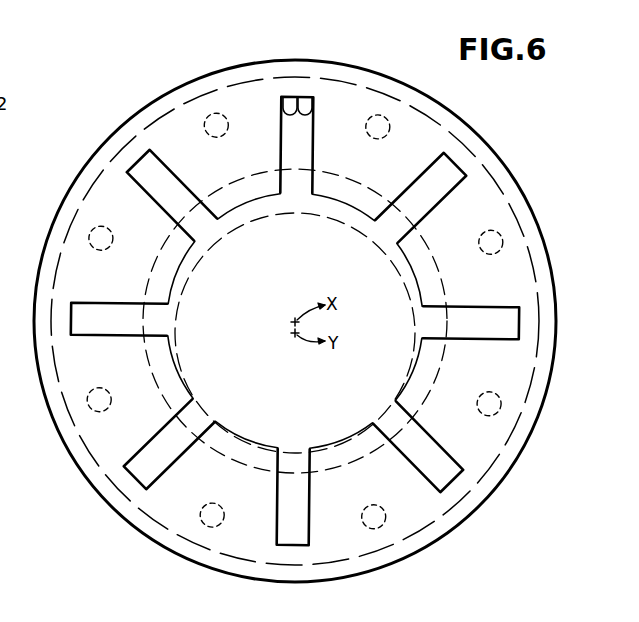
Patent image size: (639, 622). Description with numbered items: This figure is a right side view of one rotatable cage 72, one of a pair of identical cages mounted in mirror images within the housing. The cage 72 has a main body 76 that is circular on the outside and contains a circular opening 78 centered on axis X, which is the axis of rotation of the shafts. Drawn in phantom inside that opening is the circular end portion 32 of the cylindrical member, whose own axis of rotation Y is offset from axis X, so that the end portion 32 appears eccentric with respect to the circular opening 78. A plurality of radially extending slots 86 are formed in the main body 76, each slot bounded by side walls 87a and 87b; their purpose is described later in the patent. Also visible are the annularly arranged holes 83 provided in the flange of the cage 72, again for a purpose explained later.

The rotatable cage 72 is at (224, 62).
The main body 76 is at (161, 94).
The circular opening 78 is at (237, 205).
The annularly arranged holes 83 is at (225, 112).
The radially extending slots 86 is at (443, 200).
The side wall 87a is at (293, 102).
The side wall 87b is at (301, 108).
The end portion 32 is at (373, 242).